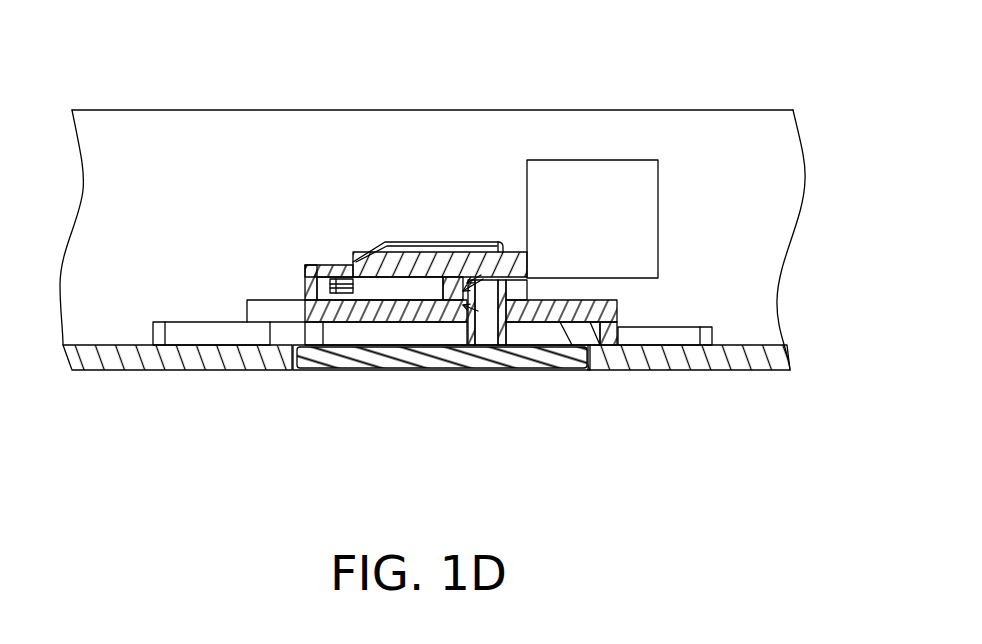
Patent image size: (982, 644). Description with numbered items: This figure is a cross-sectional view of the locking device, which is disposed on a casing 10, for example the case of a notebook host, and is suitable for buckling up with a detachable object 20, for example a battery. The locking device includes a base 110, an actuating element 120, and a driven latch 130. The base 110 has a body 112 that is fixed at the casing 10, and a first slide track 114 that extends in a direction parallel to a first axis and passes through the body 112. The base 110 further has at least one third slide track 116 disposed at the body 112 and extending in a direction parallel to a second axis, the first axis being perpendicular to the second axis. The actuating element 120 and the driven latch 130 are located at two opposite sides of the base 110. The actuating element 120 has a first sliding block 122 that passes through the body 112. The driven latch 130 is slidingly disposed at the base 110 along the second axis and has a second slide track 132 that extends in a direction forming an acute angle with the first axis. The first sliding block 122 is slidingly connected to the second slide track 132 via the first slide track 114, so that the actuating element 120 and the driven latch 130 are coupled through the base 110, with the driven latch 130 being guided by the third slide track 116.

The casing 10 is at (253, 362).
The detachable object 20 is at (567, 118).
The base 110 is at (420, 253).
The body 112 is at (323, 312).
The first slide track 114 is at (475, 318).
The third slide track 116 is at (367, 288).
The actuating element 120 is at (362, 358).
The first sliding block 122 is at (506, 324).
The driven latch 130 is at (407, 260).
The second slide track 132 is at (490, 240).